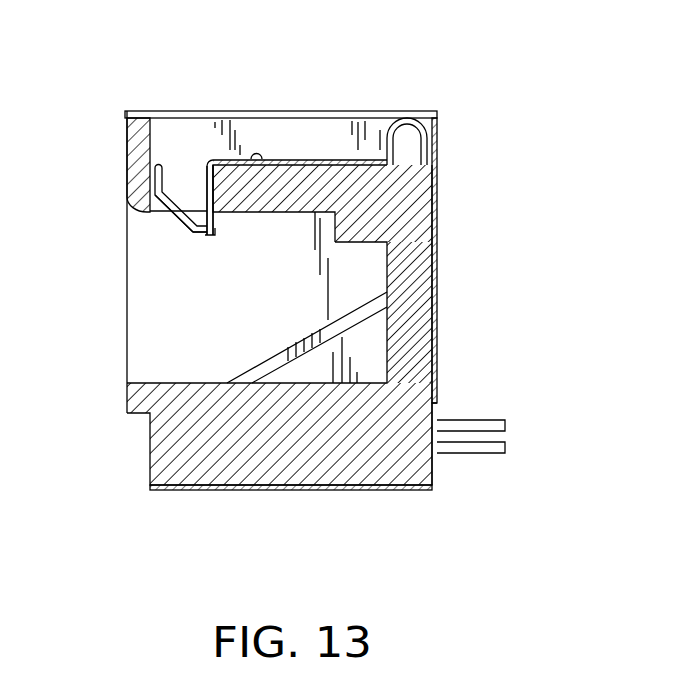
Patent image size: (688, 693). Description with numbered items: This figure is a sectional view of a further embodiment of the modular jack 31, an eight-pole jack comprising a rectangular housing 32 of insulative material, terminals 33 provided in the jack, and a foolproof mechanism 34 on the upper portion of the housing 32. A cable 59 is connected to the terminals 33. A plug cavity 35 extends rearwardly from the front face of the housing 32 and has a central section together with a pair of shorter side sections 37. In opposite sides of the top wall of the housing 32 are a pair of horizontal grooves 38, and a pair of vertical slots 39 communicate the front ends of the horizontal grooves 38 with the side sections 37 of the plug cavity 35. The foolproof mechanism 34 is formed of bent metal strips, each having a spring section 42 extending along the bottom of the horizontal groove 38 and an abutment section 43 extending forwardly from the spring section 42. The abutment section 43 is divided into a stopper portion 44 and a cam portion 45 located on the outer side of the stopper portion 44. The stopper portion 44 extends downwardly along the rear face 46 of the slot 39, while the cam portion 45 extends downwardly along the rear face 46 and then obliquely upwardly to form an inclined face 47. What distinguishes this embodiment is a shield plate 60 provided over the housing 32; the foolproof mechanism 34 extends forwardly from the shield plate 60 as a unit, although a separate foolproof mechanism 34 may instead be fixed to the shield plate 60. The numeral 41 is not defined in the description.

The modular jack 31 is at (473, 213).
The housing 32 is at (303, 447).
The terminals 33 is at (357, 313).
The foolproof mechanism 34 is at (305, 156).
The plug cavity 35 is at (232, 352).
The side sections 37 is at (165, 220).
The horizontal grooves 38 is at (250, 150).
The vertical slots 39 is at (182, 188).
The foot portion 41 is at (251, 213).
The spring section 42 is at (337, 160).
The abutment section 43 is at (149, 178).
The stopper portion 44 is at (217, 220).
The cam portion 45 is at (196, 238).
The rear face 46 is at (198, 188).
The inclined face 47 is at (175, 223).
The cable 59 is at (481, 427).
The shield plate 60 is at (372, 158).